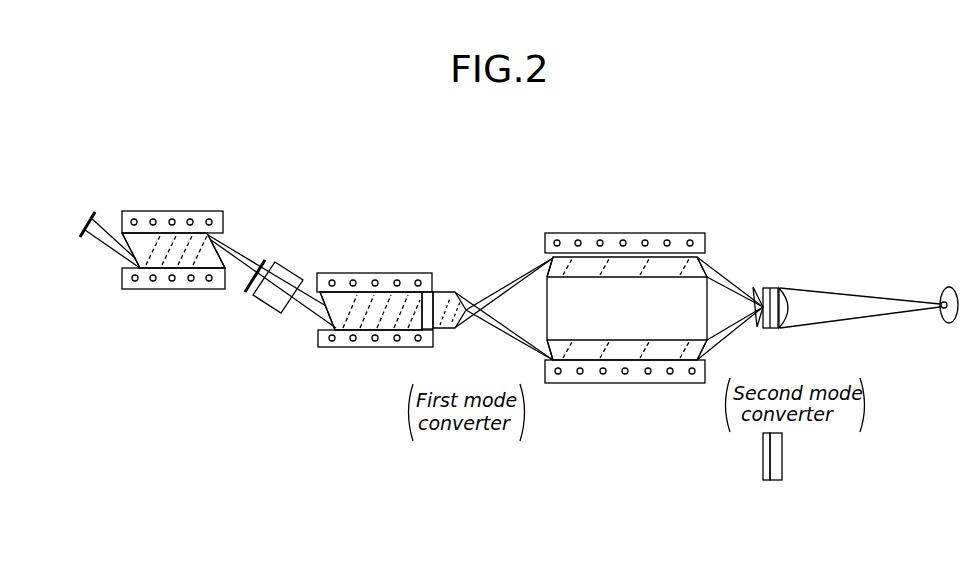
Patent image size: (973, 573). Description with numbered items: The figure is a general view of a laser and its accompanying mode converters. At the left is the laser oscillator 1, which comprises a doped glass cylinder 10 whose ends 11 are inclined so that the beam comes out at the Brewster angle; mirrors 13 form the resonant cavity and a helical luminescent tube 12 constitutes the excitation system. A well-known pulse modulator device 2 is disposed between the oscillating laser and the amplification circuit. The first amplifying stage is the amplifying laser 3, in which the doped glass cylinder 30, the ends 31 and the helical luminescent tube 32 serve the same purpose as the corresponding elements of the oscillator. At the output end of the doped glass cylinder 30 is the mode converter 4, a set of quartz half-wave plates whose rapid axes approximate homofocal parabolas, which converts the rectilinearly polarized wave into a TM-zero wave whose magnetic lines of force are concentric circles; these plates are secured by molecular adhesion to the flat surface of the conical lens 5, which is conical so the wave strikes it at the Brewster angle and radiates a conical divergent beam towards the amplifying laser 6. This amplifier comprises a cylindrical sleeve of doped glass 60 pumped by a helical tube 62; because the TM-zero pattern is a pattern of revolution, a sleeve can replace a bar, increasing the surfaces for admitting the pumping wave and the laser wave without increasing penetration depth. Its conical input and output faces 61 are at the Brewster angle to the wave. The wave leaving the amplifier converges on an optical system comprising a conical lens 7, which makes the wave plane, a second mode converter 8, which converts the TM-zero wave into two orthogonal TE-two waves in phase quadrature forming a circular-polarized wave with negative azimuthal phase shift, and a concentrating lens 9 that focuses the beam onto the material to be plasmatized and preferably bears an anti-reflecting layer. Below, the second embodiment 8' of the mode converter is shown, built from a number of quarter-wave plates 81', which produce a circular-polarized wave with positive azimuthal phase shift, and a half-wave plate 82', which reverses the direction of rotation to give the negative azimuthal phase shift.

The laser oscillator 1 is at (224, 204).
The doped glass cylinder 10 is at (157, 290).
The ends 11 is at (132, 256).
The helical luminescent tube 12 is at (208, 283).
The mirrors 13 is at (88, 215).
The pulse modulator device 2 is at (282, 266).
The amplifying laser 3 is at (432, 269).
The doped glass cylinder 30 is at (352, 325).
The ends 31 is at (320, 316).
The helical luminescent tube 32 is at (397, 346).
The mode converter 4 is at (433, 330).
The conical lens 5 is at (446, 300).
The amplifying laser 6 is at (690, 224).
The cylindrical sleeve of doped glass 60 is at (630, 270).
The conical input and output faces 61 is at (548, 270).
The helical tube 62 is at (648, 374).
The conical lens 7 is at (760, 291).
The second mode converter 8 is at (777, 322).
The concentrating lens 9 is at (788, 300).
The second embodiment of the mode converter 8' is at (775, 494).
The quarter-wave plates 81' is at (755, 472).
The half-wave plate 82' is at (792, 472).